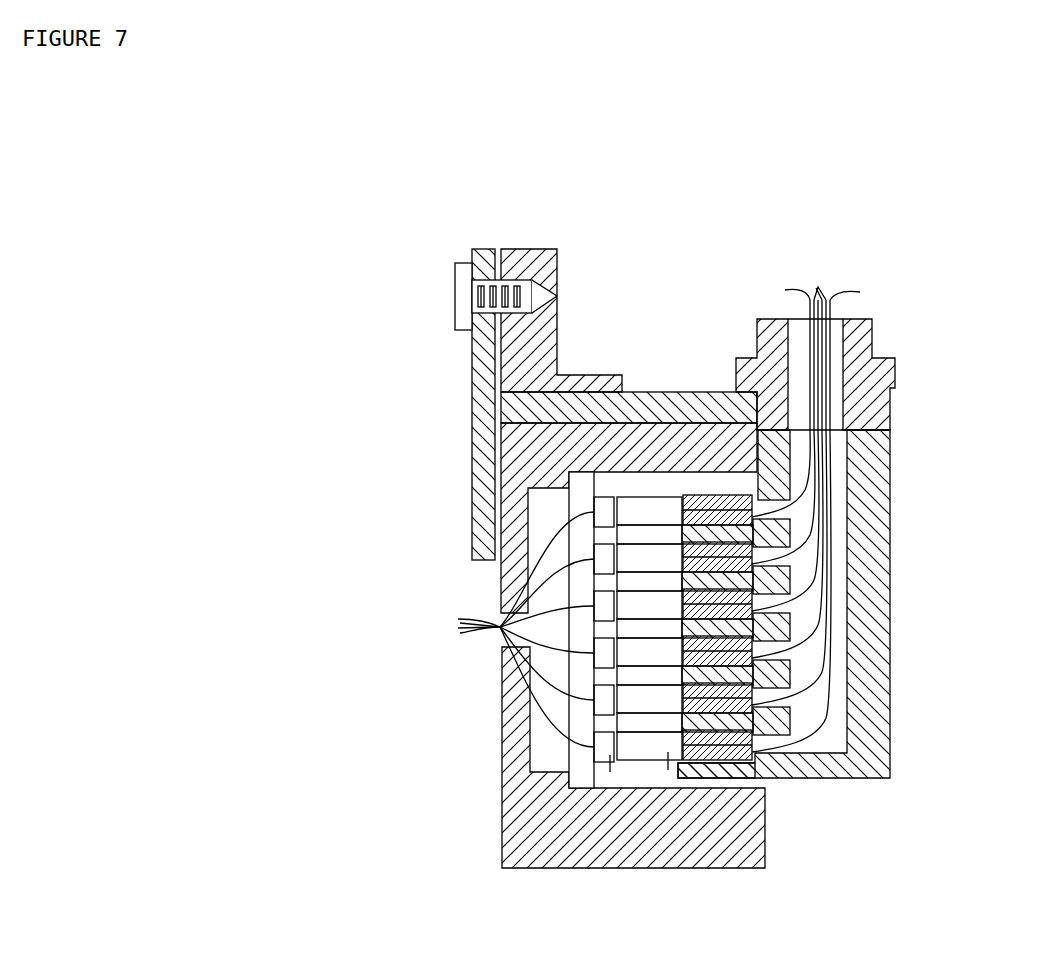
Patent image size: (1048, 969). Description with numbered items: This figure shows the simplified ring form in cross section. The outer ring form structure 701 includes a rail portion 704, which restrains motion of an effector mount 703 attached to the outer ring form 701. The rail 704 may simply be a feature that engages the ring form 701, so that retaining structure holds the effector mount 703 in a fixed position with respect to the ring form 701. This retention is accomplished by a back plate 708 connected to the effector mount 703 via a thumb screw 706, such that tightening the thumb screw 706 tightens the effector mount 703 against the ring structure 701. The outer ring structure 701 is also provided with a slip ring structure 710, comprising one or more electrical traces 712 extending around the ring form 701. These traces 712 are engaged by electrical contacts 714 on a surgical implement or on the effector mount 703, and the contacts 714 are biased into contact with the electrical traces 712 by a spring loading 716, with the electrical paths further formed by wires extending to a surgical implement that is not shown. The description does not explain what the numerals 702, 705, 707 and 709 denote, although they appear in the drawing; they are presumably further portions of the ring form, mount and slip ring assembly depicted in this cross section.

The outer ring form structure 701 is at (527, 815).
The top cap with fiber slot 702 is at (893, 372).
The effector mount 703 is at (893, 438).
The rail portion 704 is at (512, 470).
The input optical fibers 705 is at (600, 512).
The thumb screw 706 is at (462, 295).
The mounting plate 707 is at (583, 765).
The back plate 708 is at (490, 380).
The fiber ferrules 709 is at (613, 757).
The slip ring structure 710 is at (652, 505).
The electrical traces 712 is at (668, 755).
The electrical contacts 714 is at (767, 778).
The spring loading 716 is at (735, 400).